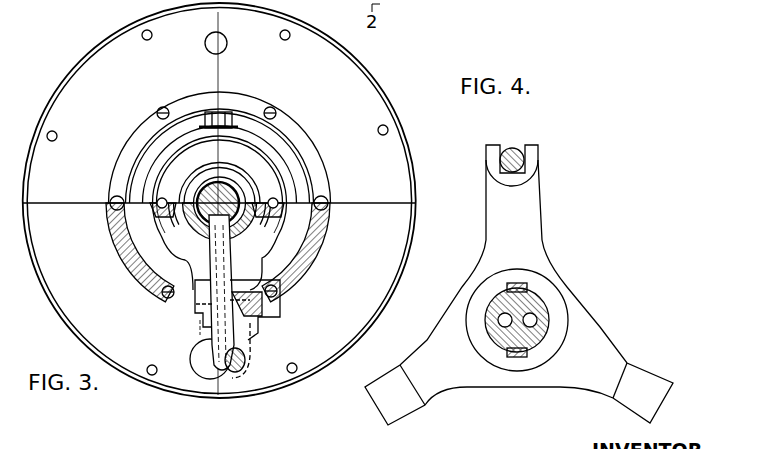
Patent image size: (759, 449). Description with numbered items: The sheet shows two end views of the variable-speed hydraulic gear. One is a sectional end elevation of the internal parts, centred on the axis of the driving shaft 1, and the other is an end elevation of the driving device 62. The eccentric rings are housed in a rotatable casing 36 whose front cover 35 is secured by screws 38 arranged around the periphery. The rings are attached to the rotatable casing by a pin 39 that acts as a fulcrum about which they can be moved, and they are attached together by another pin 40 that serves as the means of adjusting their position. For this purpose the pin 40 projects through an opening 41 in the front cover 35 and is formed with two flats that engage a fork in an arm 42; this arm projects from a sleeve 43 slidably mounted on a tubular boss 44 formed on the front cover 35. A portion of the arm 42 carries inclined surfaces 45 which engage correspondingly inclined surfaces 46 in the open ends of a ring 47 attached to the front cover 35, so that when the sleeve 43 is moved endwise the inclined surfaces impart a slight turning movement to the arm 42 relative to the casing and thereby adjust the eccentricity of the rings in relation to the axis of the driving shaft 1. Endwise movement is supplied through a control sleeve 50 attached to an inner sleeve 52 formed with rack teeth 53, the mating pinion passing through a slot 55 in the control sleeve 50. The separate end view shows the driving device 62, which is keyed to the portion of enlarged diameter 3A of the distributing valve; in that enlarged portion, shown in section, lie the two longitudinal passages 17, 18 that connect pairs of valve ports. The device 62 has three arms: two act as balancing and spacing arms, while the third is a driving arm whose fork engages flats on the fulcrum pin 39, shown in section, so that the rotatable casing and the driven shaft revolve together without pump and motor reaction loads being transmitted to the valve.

In FIG. 3, the driving shaft 1 is at (202, 196).
In FIG. 3, the front cover 35 is at (231, 188).
In FIG. 3, the rotatable casing 36 is at (362, 68).
In FIG. 3, the screws 38 is at (144, 32).
In FIG. 3, the pin 39 is at (227, 42).
In FIG. 4, the pin 39 is at (512, 148).
In FIG. 3, the pin 40 is at (246, 357).
In FIG. 3, the opening 41 is at (198, 348).
In FIG. 3, the arm 42 is at (252, 336).
In FIG. 3, the sleeve 43 is at (254, 180).
In FIG. 3, the tubular boss 44 is at (246, 192).
In FIG. 3, the inclined surfaces 45 is at (202, 313).
In FIG. 3, the inclined surfaces 46 is at (198, 308).
In FIG. 3, the ring 47 is at (280, 168).
In FIG. 3, the control sleeve 50 is at (186, 122).
In FIG. 3, the inner sleeve 52 is at (168, 148).
In FIG. 3, the rack teeth 53 is at (238, 125).
In FIG. 3, the slot 55 is at (233, 127).
In FIG. 4, the driving device 62 is at (405, 407).
In FIG. 4, the portion of enlarged diameter 3A is at (540, 297).
In FIG. 4, the longitudinal passage 17 is at (498, 320).
In FIG. 4, the longitudinal passage 18 is at (540, 318).